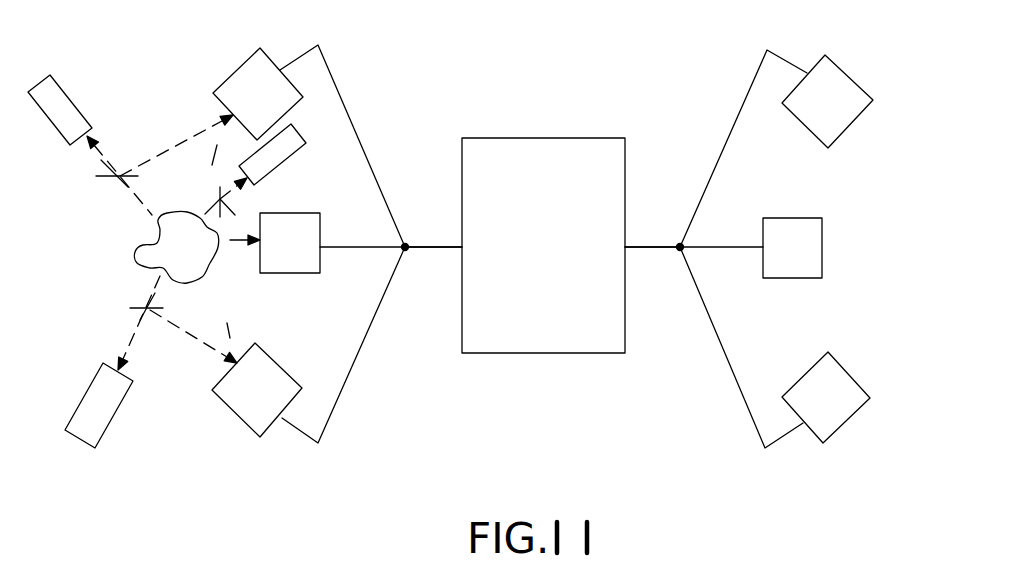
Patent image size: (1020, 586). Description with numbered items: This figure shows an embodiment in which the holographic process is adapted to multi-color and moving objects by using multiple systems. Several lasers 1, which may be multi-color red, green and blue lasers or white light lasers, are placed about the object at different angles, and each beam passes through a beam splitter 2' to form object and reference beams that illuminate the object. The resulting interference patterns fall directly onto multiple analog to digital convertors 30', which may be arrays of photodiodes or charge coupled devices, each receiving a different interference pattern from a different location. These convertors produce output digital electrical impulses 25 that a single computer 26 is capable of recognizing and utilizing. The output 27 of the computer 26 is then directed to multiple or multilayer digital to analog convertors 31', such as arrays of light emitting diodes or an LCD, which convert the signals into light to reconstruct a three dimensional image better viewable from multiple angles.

The laser 1 is at (138, 433).
The beam splitter 2' is at (155, 240).
The analog to digital convertor 30' is at (268, 242).
The output digital electrical impulses 25 is at (432, 247).
The computer 26 is at (523, 138).
The output of the computer 27 is at (650, 247).
The digital to analog convertor 31' is at (830, 228).